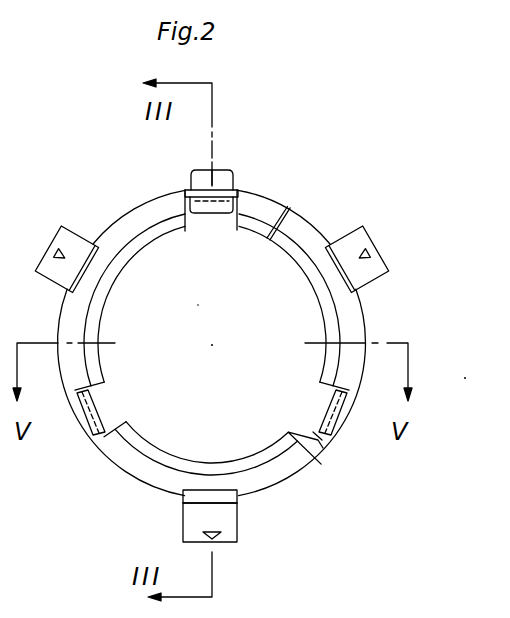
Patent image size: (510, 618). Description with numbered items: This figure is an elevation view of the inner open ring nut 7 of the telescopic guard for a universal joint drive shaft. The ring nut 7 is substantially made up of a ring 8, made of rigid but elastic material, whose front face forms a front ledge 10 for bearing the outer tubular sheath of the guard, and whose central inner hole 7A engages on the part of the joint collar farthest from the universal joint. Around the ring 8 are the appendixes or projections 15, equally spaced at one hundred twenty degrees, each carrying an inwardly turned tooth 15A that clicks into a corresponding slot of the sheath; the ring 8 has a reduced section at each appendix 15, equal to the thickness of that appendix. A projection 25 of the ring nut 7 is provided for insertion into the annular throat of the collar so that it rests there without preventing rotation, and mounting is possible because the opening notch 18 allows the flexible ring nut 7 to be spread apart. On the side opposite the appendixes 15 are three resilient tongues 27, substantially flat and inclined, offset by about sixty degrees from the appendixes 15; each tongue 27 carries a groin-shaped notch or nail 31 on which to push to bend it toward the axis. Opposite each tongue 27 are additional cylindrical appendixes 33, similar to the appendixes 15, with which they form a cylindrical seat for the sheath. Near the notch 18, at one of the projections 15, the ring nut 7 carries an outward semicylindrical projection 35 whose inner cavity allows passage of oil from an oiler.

The inner open ring nut 7 is at (120, 205).
The inner hole 7A is at (284, 451).
The ring 8 is at (110, 231).
The front ledge 10 is at (137, 242).
The appendixes or projections 15 is at (197, 205).
The tooth 15A is at (314, 430).
The notch 18 is at (262, 246).
The projection 25 is at (188, 450).
The resilient tongues 27 is at (352, 238).
The groin-shaped notch or nail 31 is at (222, 541).
The additional cylindrical appendixes or projections 33 is at (183, 518).
The projection 35 is at (214, 177).